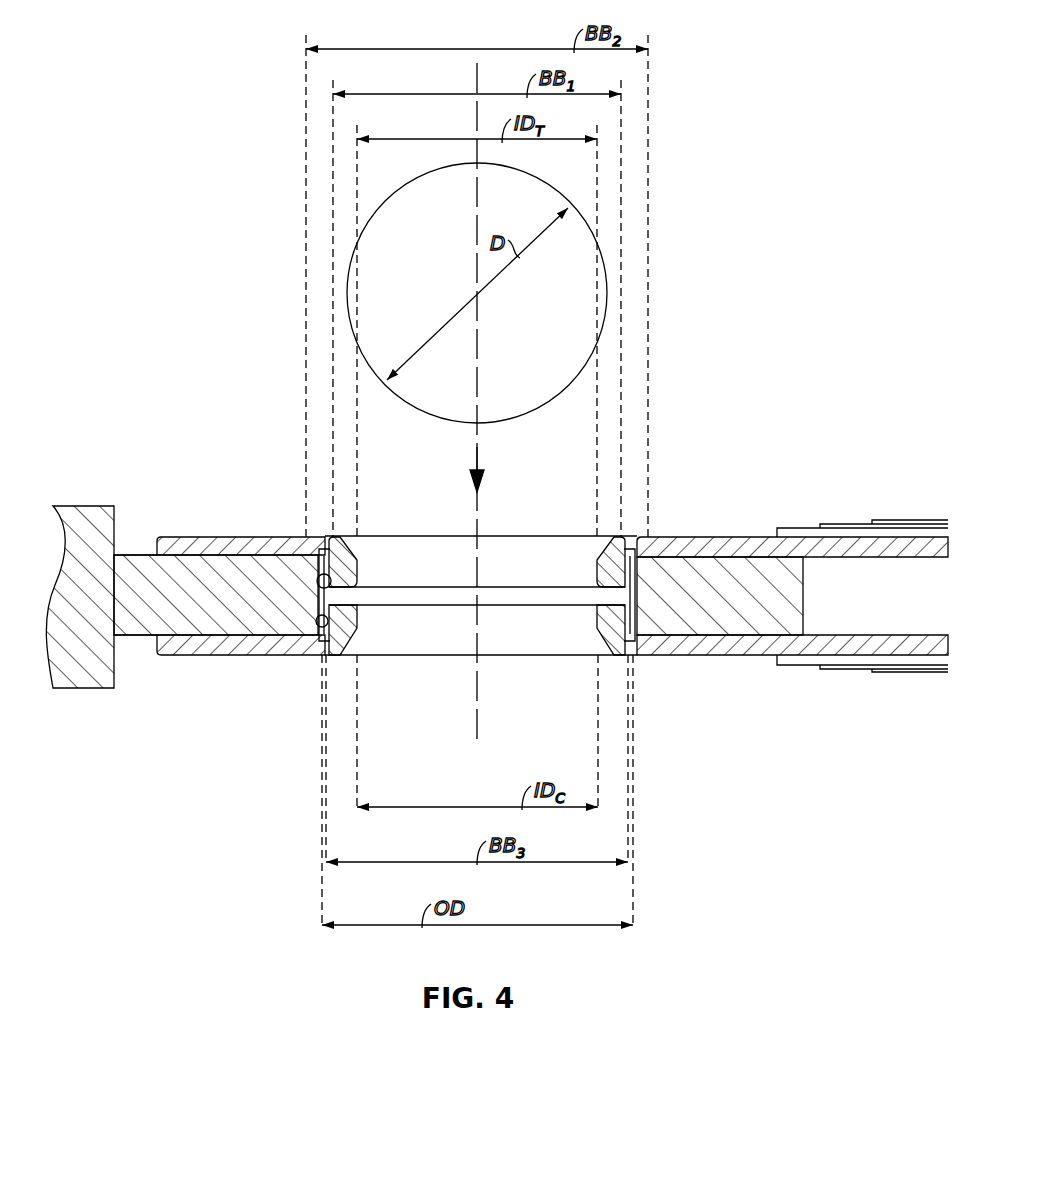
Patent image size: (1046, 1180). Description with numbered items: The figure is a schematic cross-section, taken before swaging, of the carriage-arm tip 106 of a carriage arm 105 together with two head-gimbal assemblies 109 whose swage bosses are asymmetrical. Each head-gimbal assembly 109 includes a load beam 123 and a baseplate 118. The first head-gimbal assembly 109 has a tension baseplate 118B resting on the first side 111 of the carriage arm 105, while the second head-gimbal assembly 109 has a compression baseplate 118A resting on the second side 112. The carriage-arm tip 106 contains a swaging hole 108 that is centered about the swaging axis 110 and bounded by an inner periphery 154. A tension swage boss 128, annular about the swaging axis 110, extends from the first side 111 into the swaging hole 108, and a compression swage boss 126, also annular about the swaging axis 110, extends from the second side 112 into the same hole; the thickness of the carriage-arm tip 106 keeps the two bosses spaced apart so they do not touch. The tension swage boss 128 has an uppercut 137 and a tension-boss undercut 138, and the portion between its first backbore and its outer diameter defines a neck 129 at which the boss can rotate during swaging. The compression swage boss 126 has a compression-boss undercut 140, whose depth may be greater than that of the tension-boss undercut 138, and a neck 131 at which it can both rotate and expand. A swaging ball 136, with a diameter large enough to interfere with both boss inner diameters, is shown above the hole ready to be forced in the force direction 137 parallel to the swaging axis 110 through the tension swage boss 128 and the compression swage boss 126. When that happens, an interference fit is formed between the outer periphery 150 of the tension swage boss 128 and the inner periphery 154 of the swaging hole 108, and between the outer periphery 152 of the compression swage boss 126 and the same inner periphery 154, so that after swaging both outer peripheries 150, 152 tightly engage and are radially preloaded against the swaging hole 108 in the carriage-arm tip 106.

The carriage arm 105 is at (93, 506).
The carriage-arm tip 106 is at (200, 587).
The swaging hole 108 is at (395, 597).
The head-gimbal assembly 109 is at (857, 522).
The swaging axis 110 is at (480, 76).
The first side 111 is at (130, 556).
The second side 112 is at (140, 636).
The baseplate 118 is at (237, 533).
The compression baseplate 118A is at (720, 648).
The tension baseplate 118B is at (742, 545).
The load beam 123 is at (900, 520).
The compression swage boss 126 is at (598, 636).
The tension swage boss 128 is at (598, 578).
The neck 129 is at (328, 536).
The neck 131 is at (313, 656).
The swaging ball 136 is at (580, 275).
The force direction 137 is at (480, 458).
The tension-boss undercut 138 is at (636, 552).
The compression-boss undercut 140 is at (643, 638).
The outer periphery 150 is at (300, 537).
The outer periphery 152 is at (318, 622).
The inner periphery 154 is at (317, 573).